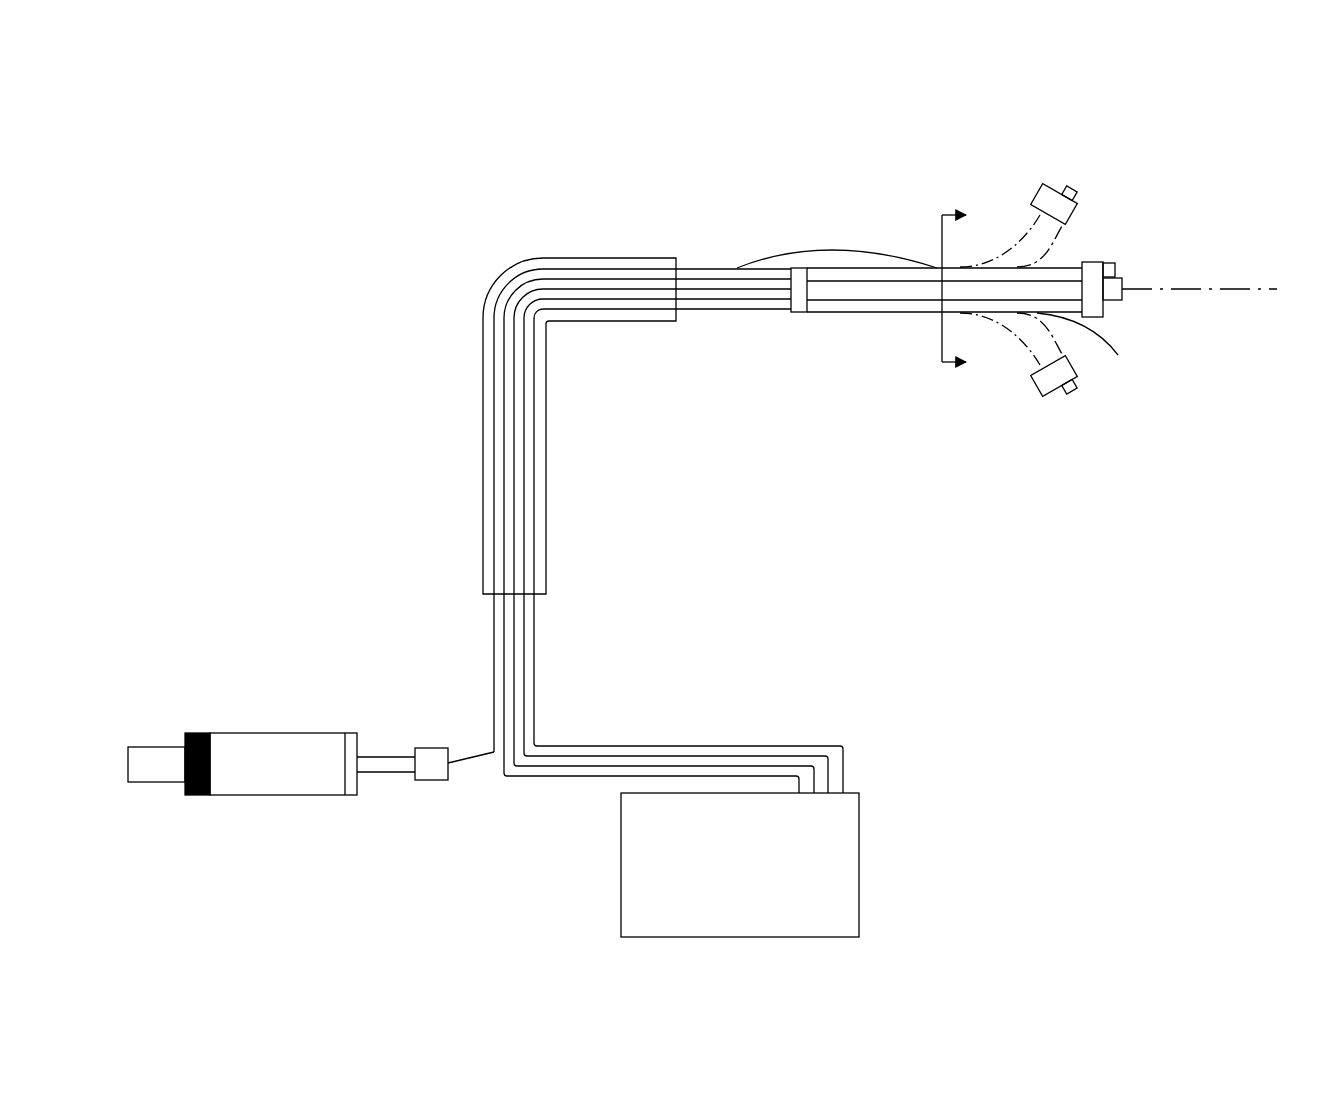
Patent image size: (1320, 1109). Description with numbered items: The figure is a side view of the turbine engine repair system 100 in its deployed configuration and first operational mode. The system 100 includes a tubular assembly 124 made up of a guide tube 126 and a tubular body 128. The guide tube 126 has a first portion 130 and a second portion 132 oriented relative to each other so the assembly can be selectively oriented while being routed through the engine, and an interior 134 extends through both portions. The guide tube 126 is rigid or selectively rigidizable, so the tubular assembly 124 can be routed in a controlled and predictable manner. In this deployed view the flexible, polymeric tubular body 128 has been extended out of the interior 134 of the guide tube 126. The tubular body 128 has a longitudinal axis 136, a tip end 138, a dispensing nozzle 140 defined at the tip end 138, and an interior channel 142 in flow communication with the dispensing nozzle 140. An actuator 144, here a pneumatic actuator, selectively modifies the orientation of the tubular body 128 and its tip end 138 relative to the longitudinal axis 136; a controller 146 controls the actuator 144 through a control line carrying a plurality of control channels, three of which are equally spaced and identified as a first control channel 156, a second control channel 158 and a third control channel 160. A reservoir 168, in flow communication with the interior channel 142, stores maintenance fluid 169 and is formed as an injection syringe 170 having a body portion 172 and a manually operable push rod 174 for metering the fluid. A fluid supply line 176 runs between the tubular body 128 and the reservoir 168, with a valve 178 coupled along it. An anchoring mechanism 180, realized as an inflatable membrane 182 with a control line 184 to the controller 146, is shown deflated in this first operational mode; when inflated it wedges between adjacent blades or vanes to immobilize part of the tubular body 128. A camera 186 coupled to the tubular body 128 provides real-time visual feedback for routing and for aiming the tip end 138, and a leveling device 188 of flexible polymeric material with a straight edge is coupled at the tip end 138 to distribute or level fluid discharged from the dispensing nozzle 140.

The system 100 is at (1098, 118).
The tubular assembly 124 is at (515, 185).
The guide tube 126 is at (483, 385).
The tubular body 128 is at (1072, 243).
The first portion 130 is at (483, 435).
The second portion 132 is at (570, 257).
The interior 134 is at (535, 553).
The longitudinal axis 136 is at (1252, 291).
The tip end 138 is at (1110, 238).
The dispensing nozzle 140 is at (1122, 293).
The interior channel 142 is at (898, 293).
The actuator 144 is at (824, 308).
The controller 146 is at (763, 880).
The first control channel 156 is at (843, 752).
The second control channel 158 is at (795, 750).
The third control channel 160 is at (850, 776).
The reservoir 168 is at (233, 668).
The maintenance fluid 169 is at (343, 797).
The injection syringe 170 is at (182, 810).
The body portion 172 is at (270, 797).
The push rod 174 is at (210, 755).
The fluid supply line 176 is at (477, 754).
The valve 178 is at (432, 782).
The anchoring mechanism 180 is at (783, 244).
The inflatable membrane 182 is at (840, 251).
The control line 184 is at (531, 778).
The camera 186 is at (1117, 268).
The leveling device 188 is at (1116, 356).